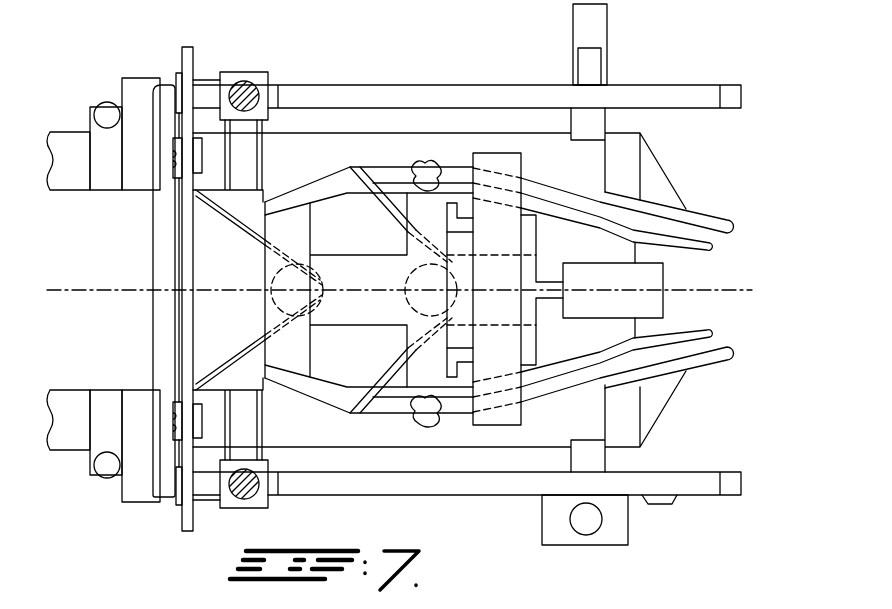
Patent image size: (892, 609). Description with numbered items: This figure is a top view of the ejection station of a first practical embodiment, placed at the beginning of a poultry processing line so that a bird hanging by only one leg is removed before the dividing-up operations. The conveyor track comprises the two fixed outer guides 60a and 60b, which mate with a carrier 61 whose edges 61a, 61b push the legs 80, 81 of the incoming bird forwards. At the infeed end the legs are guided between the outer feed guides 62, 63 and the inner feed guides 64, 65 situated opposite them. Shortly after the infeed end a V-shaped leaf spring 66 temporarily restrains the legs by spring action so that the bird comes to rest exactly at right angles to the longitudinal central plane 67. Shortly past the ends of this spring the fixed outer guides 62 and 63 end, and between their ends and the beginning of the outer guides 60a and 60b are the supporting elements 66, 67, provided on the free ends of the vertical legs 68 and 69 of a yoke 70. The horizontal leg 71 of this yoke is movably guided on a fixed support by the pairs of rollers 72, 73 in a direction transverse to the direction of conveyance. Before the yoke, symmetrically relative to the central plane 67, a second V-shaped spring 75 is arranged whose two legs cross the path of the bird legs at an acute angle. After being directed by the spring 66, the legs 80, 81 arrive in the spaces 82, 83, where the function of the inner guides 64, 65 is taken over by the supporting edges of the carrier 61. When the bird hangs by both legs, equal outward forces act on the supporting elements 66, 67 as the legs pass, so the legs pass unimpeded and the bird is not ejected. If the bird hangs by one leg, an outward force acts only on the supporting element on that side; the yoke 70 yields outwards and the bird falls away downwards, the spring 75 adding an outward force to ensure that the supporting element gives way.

The outer guide 60a is at (72, 140).
The outer guide 60b is at (58, 440).
The carrier 61 is at (512, 417).
The edge of carrier 61a is at (472, 377).
The edge of carrier 61b is at (465, 203).
The outer feed guide 62 is at (697, 220).
The outer feed guide 63 is at (705, 366).
The inner feed guide 64 is at (698, 248).
The inner feed guide 65 is at (703, 336).
The V-shaped leaf spring 66 is at (140, 123).
The longitudinal central plane 67 is at (137, 458).
The vertical leg of yoke 68 is at (167, 97).
The vertical leg of yoke 69 is at (163, 490).
The yoke 70 is at (150, 325).
The horizontal leg of yoke 71 is at (165, 247).
The pair of rollers 72 is at (173, 160).
The pair of rollers 73 is at (197, 76).
The second V-shaped spring 75 is at (323, 277).
The leg of poultry 80 is at (420, 160).
The leg of poultry 81 is at (414, 427).
The space 82 is at (241, 198).
The space 83 is at (243, 378).